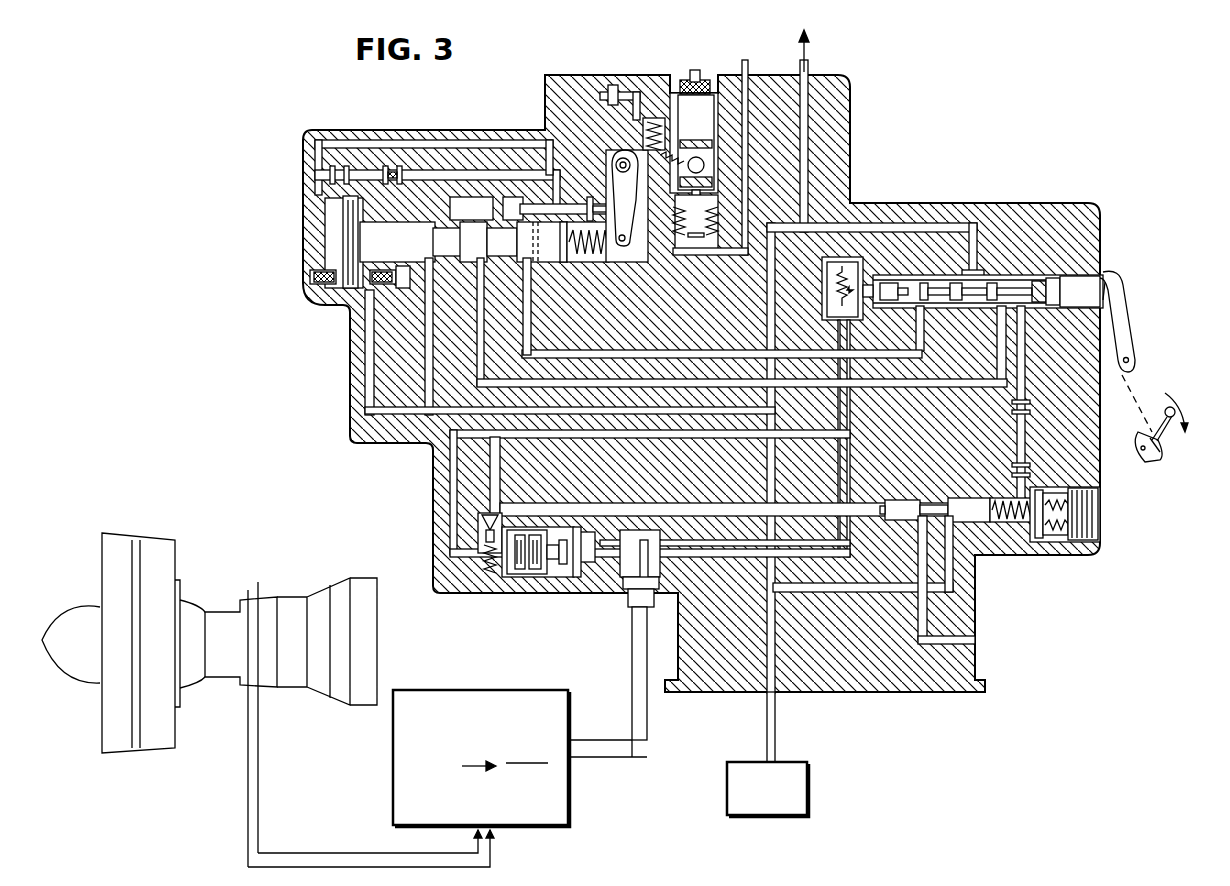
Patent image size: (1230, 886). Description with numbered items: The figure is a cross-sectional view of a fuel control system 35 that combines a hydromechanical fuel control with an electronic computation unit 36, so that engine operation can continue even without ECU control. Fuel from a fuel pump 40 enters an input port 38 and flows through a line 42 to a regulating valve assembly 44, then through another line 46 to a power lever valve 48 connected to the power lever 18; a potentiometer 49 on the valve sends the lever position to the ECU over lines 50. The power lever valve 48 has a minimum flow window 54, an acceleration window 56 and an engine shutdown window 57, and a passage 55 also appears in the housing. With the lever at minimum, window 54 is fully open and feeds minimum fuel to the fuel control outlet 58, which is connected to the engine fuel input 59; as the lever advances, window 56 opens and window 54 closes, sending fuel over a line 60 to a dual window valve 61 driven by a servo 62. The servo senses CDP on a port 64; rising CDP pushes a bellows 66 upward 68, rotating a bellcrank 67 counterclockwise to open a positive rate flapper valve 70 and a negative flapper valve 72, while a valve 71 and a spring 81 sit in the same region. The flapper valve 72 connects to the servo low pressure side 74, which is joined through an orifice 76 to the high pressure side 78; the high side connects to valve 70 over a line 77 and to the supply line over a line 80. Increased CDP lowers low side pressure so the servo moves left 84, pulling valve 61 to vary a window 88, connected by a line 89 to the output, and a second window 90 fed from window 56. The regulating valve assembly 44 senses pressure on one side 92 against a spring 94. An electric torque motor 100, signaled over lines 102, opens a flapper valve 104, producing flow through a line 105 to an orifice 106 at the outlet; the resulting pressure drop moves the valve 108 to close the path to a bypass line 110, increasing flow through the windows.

The power lever 18 is at (1165, 455).
The fuel control system 35 is at (935, 135).
The electronic computation unit 36 is at (474, 690).
The input port 38 is at (767, 655).
The fuel pump 40 is at (809, 784).
The line 42 is at (820, 588).
The regulating valve assembly 44 is at (962, 500).
The line 46 is at (767, 465).
The power lever valve 48 is at (986, 271).
The potentiometer 49 is at (860, 265).
The lines 50 is at (650, 558).
The minimum flow window 54 is at (930, 308).
The passage 55 is at (905, 352).
The acceleration window 56 is at (1018, 310).
The engine shutdown window 57 is at (980, 308).
The fuel control outlet 58 is at (812, 70).
The engine fuel input 59 is at (262, 586).
The line 60 is at (913, 383).
The dual window valve 61 is at (500, 242).
The servo 62 is at (342, 218).
The port 64 is at (745, 72).
The bellows 66 is at (695, 224).
The bellcrank 67 is at (627, 206).
The upward direction 68 is at (715, 185).
The positive rate flapper valve 70 is at (603, 200).
The valve 71 is at (390, 168).
The negative flapper valve 72 is at (640, 128).
The low pressure side 74 is at (330, 262).
The orifice 76 is at (336, 172).
The line 77 is at (410, 162).
The high pressure side 78 is at (362, 222).
The line 80 is at (365, 292).
The spring 81 is at (594, 262).
The leftward direction 84 is at (290, 240).
The window 88 is at (434, 262).
The line 89 is at (440, 195).
The second window 90 is at (488, 262).
The one side 92 is at (883, 520).
The spring 94 is at (1010, 545).
The electric torque motor 100 is at (535, 578).
The lines 102 is at (584, 548).
The flapper valve 104 is at (478, 538).
The line 105 is at (630, 445).
The orifice 106 is at (1027, 408).
The valve 108 is at (969, 510).
The bypass line 110 is at (918, 625).